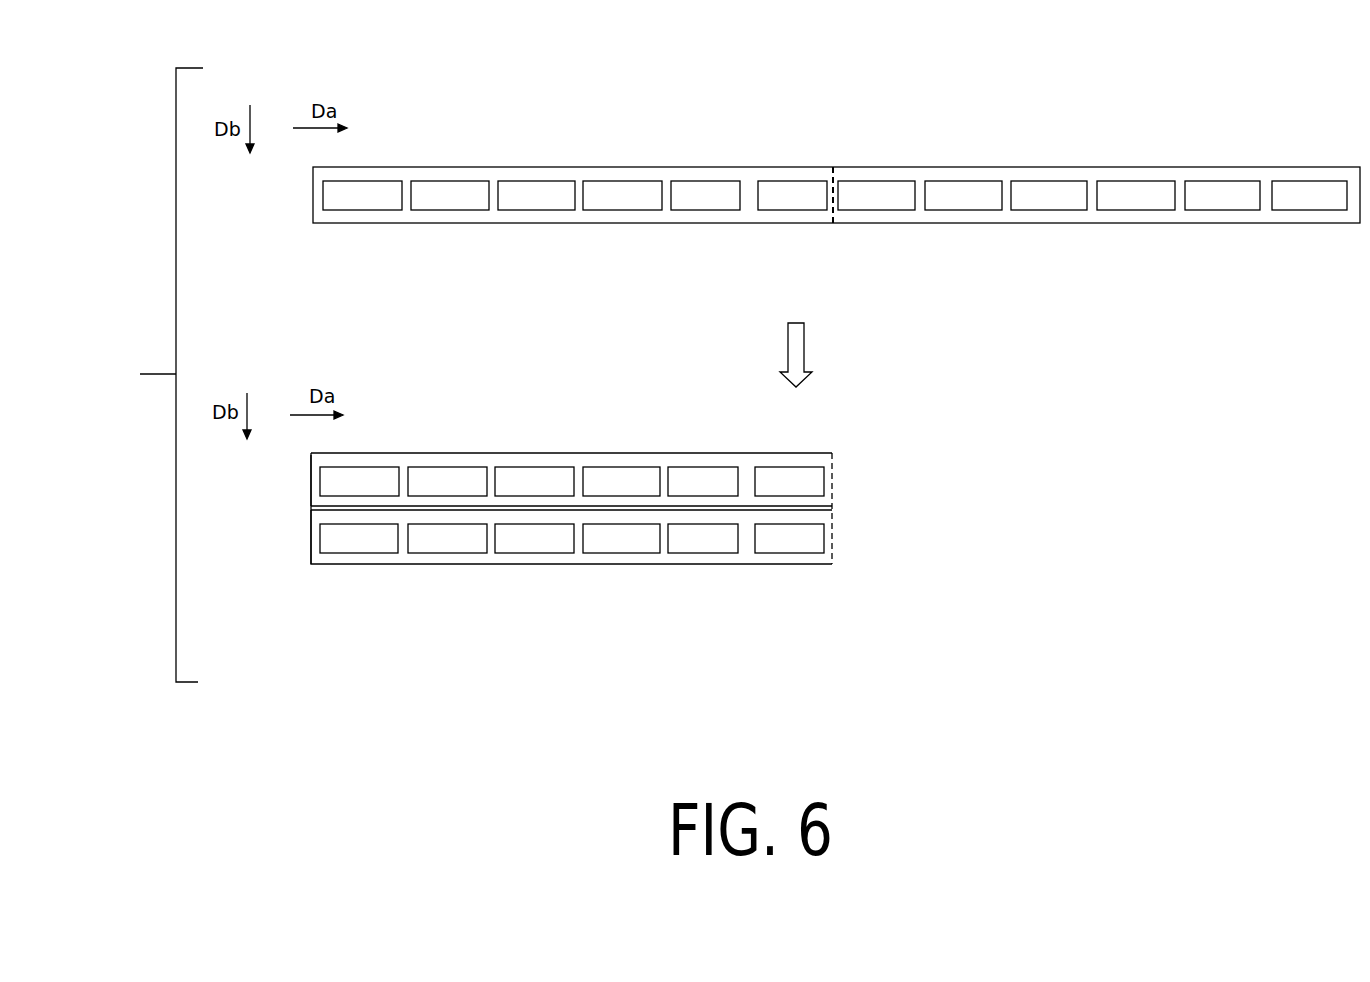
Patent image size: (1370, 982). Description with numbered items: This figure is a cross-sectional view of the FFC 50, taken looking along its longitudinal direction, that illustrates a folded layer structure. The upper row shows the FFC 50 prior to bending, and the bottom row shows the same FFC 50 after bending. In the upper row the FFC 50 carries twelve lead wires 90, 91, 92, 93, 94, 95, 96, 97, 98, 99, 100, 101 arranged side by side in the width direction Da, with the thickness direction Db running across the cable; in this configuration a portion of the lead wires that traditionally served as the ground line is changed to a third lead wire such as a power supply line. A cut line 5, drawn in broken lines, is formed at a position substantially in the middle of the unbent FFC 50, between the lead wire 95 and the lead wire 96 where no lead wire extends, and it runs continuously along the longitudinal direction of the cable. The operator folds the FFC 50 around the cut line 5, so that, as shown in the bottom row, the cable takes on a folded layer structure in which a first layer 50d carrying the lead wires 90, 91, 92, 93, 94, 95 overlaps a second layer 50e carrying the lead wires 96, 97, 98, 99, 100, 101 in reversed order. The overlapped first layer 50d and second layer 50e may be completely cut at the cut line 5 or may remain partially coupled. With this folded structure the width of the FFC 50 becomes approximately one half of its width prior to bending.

The cut line 5 is at (829, 238).
The FFC 50 is at (482, 241).
The first layer 50d is at (311, 483).
The second layer 50e is at (311, 540).
The lead wire 90 is at (353, 181).
The lead wire 91 is at (440, 181).
The lead wire 92 is at (527, 181).
The lead wire 93 is at (612, 181).
The lead wire 94 is at (701, 181).
The lead wire 95 is at (786, 181).
The lead wire 96 is at (872, 181).
The lead wire 97 is at (957, 181).
The lead wire 98 is at (1041, 181).
The lead wire 99 is at (1122, 181).
The lead wire 100 is at (1212, 181).
The lead wire 101 is at (1298, 181).